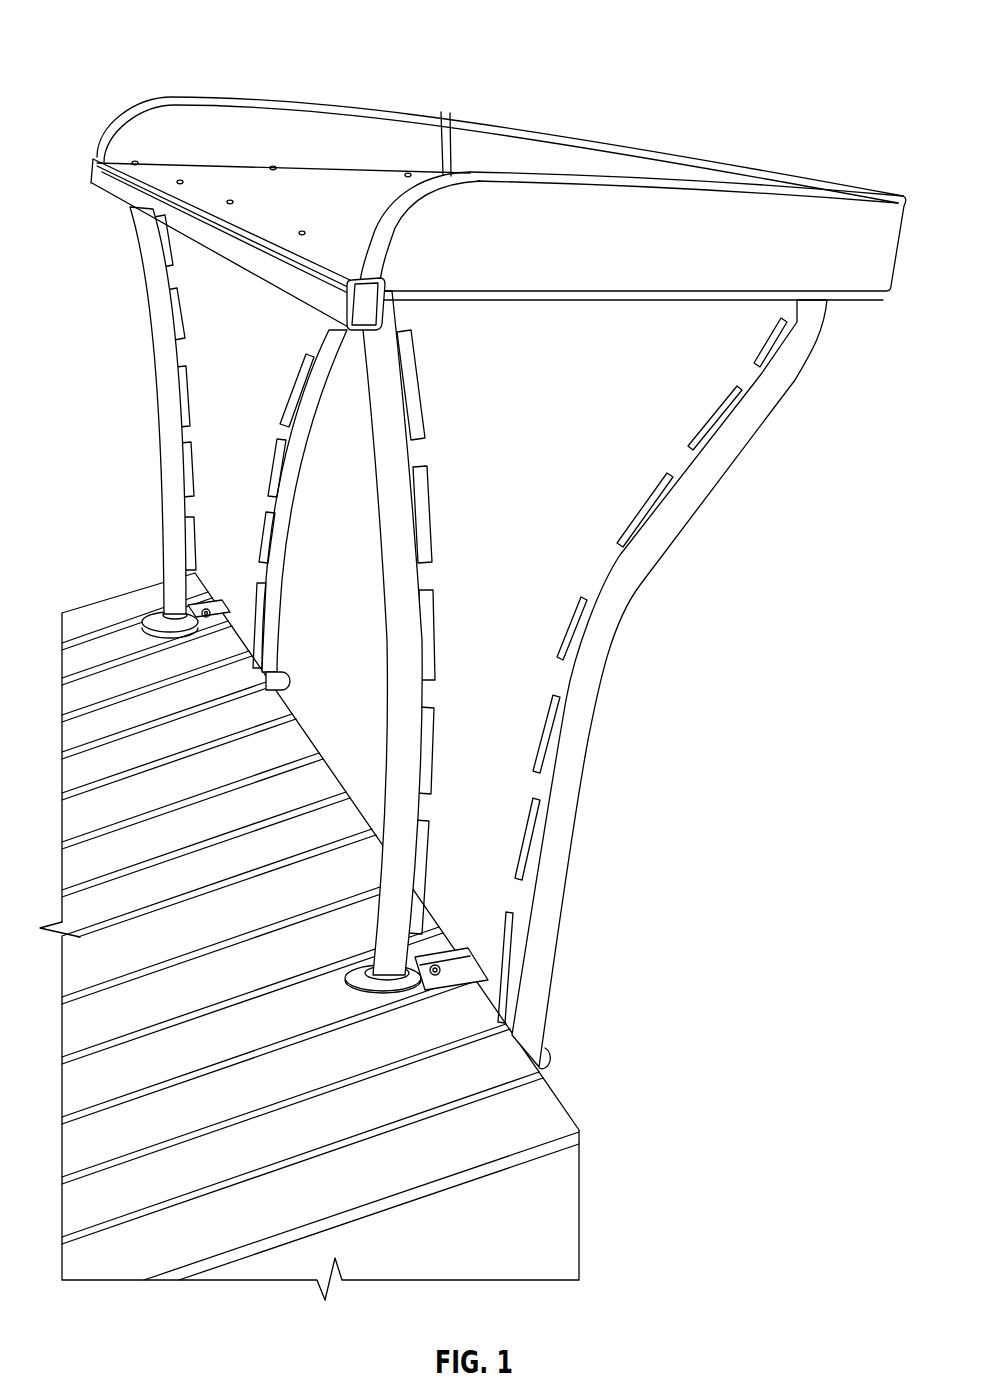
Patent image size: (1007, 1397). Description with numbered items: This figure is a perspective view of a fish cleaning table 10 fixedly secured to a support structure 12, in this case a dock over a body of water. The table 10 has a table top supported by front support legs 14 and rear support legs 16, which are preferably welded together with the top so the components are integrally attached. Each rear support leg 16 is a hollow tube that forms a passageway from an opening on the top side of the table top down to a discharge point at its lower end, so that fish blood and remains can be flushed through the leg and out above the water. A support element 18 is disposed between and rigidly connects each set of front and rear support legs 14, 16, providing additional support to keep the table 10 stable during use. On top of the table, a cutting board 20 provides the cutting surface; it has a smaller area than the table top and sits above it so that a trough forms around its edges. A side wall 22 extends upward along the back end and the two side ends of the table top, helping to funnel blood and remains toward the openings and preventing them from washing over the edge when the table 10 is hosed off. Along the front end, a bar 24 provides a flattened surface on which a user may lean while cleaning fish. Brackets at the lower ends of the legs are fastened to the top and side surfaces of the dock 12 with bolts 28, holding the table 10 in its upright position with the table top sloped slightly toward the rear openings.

The fish cleaning table 10 is at (116, 28).
The support structure 12 is at (189, 1006).
The front support legs 14 is at (172, 392).
The rear support legs 16 is at (283, 535).
The support element 18 is at (257, 390).
The cutting board 20 is at (308, 200).
The side wall 22 is at (882, 250).
The bar 24 is at (137, 191).
The bolts 28 is at (203, 610).